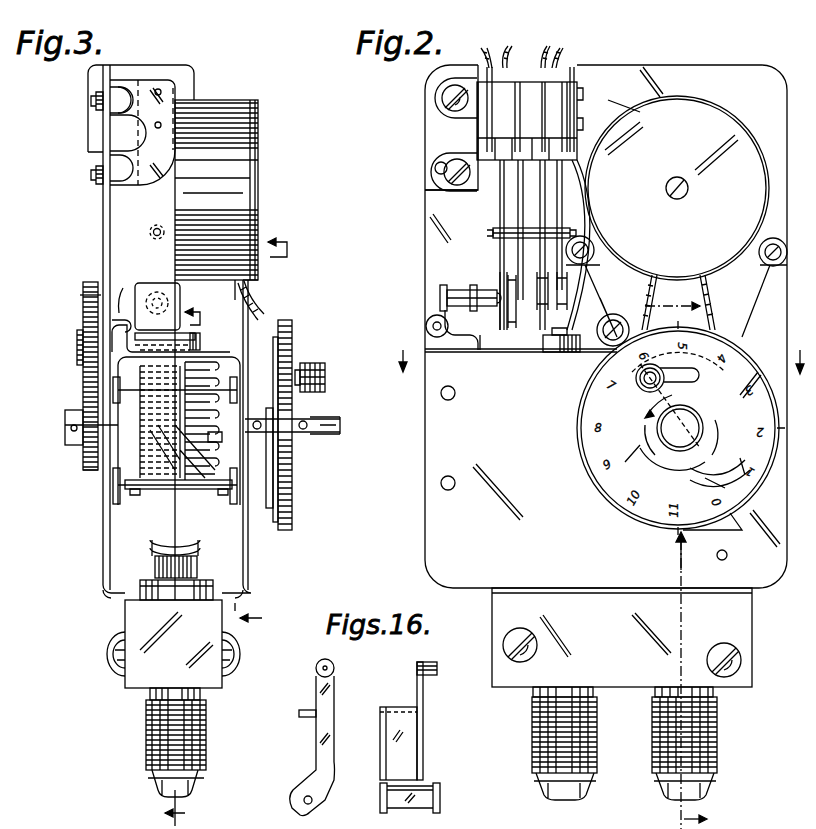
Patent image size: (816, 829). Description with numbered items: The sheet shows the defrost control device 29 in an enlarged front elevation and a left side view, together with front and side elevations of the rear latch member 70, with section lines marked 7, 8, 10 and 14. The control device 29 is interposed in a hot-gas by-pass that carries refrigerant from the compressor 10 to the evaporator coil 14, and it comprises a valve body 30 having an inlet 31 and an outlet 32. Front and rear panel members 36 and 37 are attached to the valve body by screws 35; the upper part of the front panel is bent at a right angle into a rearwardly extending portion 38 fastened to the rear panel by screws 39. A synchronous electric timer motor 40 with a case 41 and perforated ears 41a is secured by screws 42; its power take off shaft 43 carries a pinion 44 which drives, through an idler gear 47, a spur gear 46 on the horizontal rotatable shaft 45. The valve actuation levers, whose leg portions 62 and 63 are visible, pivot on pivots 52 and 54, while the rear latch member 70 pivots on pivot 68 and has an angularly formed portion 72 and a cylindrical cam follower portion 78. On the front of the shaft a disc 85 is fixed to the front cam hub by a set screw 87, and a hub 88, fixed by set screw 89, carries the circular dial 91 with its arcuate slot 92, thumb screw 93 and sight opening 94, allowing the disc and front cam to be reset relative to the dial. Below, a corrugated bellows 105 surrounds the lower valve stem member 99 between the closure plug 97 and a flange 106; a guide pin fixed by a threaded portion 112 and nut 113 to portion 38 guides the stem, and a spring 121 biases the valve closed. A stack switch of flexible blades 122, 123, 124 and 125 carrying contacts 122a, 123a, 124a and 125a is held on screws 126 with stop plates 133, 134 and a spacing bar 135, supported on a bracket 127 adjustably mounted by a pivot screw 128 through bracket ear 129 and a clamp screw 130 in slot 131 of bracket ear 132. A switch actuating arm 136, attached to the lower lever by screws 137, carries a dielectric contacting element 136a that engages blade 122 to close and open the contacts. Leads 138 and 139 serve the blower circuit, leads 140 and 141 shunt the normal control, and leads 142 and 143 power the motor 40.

In FIG. 2, the section line 7- 7 is at (598, 352).
In FIG. 3, the section line 8- 8 is at (268, 433).
In FIG. 3, the compressor 10 is at (193, 553).
In FIG. 2, the evaporator coil 14 is at (676, 564).
In FIG. 3, the control device 29 is at (86, 664).
In FIG. 2, the control device 29 is at (740, 58).
In FIG. 3, the valve body 30 is at (148, 672).
In FIG. 2, the valve body 30 is at (760, 645).
In FIG. 2, the inlet 31 is at (700, 802).
In FIG. 3, the outlet 32 is at (162, 796).
In FIG. 2, the outlet 32 is at (555, 800).
In FIG. 3, the screws 35 is at (113, 660).
In FIG. 2, the screws 35 is at (538, 650).
In FIG. 3, the front panel member 36 is at (248, 598).
In FIG. 2, the front panel member 36 is at (458, 553).
In FIG. 3, the rear panel member 37 is at (110, 605).
In FIG. 2, the rear panel member 37 is at (706, 62).
In FIG. 3, the rearwardly extending portion 38 is at (118, 358).
In FIG. 2, the rearwardly extending portion 38 is at (448, 312).
In FIG. 3, the screws 39 is at (112, 330).
In FIG. 2, the screws 39 is at (428, 322).
In FIG. 3, the synchronous electric timer motor 40 is at (245, 172).
In FIG. 2, the synchronous electric timer motor 40 is at (722, 126).
In FIG. 2, the case 41 is at (672, 95).
In FIG. 2, the perforated ears 41a is at (590, 248).
In FIG. 2, the screws 42 is at (590, 250).
In FIG. 3, the power take off shaft 43 is at (80, 296).
In FIG. 3, the pinion 44 is at (93, 282).
In FIG. 3, the horizontal rotatable shaft 45 is at (65, 428).
In FIG. 3, the spur gear 46 is at (90, 472).
In FIG. 3, the idler gear 47 is at (77, 375).
In FIG. 3, the pivot 52 is at (237, 378).
In FIG. 2, the pivot 52 is at (441, 393).
In FIG. 3, the pivot 54 is at (132, 490).
In FIG. 2, the pivot 54 is at (441, 483).
In FIG. 3, the leg portions 62 is at (113, 380).
In FIG. 3, the leg portions 63 is at (115, 500).
In FIG. 2, the pivot 68 is at (720, 560).
In FIG. 16, the rear latch member 70 is at (300, 755).
In FIG. 16, the angularly formed portion 72 is at (302, 710).
In FIG. 16, the cam follower portion 78 is at (316, 665).
In FIG. 3, the disc 85 is at (270, 510).
In FIG. 3, the set screw 87 is at (257, 430).
In FIG. 3, the hub 88 is at (335, 434).
In FIG. 2, the hub 88 is at (660, 432).
In FIG. 3, the set screw 89 is at (303, 430).
In FIG. 3, the circular dial 91 is at (292, 323).
In FIG. 2, the circular dial 91 is at (623, 510).
In FIG. 2, the arcuate slot 92 is at (700, 372).
In FIG. 3, the thumb screw 93 is at (325, 372).
In FIG. 2, the thumb screw 93 is at (420, 330).
In FIG. 2, the sight opening 94 is at (680, 520).
In FIG. 3, the closure plug 97 is at (142, 589).
In FIG. 3, the lower valve stem member 99 is at (200, 492).
In FIG. 3, the bellows 105 is at (158, 562).
In FIG. 3, the flange 106 is at (170, 540).
In FIG. 3, the threaded portion 112 is at (180, 337).
In FIG. 2, the threaded portion 112 is at (563, 328).
In FIG. 3, the nut 113 is at (200, 342).
In FIG. 2, the nut 113 is at (552, 352).
In FIG. 3, the spring 121 is at (224, 441).
In FIG. 3, the switch blade 122 is at (155, 208).
In FIG. 2, the switch blade 122 is at (503, 205).
In FIG. 2, the contact 122a is at (503, 332).
In FIG. 2, the switch blade 123 is at (518, 250).
In FIG. 2, the contact 123a is at (512, 310).
In FIG. 2, the switch blade 124 is at (540, 258).
In FIG. 2, the contact 124a is at (552, 282).
In FIG. 2, the switch blade 125 is at (592, 200).
In FIG. 2, the contact 125a is at (570, 294).
In FIG. 3, the screws 126 is at (160, 125).
In FIG. 2, the screws 126 is at (583, 124).
In FIG. 3, the bracket 127 is at (160, 90).
In FIG. 2, the bracket 127 is at (478, 143).
In FIG. 3, the pivot screw 128 is at (127, 92).
In FIG. 2, the pivot screw 128 is at (443, 94).
In FIG. 2, the bracket ear 129 is at (440, 108).
In FIG. 3, the clamp screw 130 is at (95, 178).
In FIG. 2, the clamp screw 130 is at (448, 188).
In FIG. 2, the slot 131 is at (436, 172).
In FIG. 2, the bracket ear 132 is at (444, 160).
In FIG. 2, the stop plate 133 is at (515, 192).
In FIG. 2, the stop plate 134 is at (562, 176).
In FIG. 3, the spacing bar 135 is at (150, 232).
In FIG. 2, the spacing bar 135 is at (553, 225).
In FIG. 3, the switch actuating arm 136 is at (123, 286).
In FIG. 2, the switch actuating arm 136 is at (447, 290).
In FIG. 2, the contacting element 136a is at (480, 352).
In FIG. 3, the screws 137 is at (138, 492).
In FIG. 3, the lead 138 is at (160, 285).
In FIG. 2, the lead 138 is at (500, 38).
In FIG. 2, the lead 139 is at (512, 48).
In FIG. 2, the lead 140 is at (548, 45).
In FIG. 2, the lead 141 is at (562, 47).
In FIG. 3, the lead 142 is at (262, 300).
In FIG. 2, the lead 142 is at (652, 290).
In FIG. 3, the lead 143 is at (263, 312).
In FIG. 2, the lead 143 is at (713, 290).